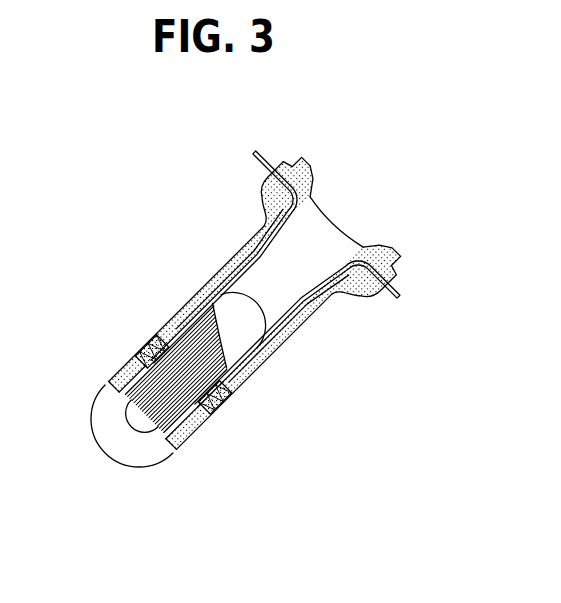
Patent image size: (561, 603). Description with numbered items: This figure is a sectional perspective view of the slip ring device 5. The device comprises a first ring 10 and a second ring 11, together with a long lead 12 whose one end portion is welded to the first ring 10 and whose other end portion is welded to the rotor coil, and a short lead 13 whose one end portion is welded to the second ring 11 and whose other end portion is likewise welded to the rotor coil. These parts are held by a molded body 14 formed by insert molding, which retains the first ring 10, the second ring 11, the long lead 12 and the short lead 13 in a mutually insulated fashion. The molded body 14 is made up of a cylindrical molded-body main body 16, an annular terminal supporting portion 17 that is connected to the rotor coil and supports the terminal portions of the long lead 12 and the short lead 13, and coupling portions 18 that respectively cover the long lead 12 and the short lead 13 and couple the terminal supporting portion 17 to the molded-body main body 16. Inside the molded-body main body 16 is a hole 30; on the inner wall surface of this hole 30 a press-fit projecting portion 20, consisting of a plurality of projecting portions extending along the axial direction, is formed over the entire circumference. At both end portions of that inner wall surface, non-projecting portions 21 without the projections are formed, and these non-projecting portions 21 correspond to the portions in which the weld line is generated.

The slip ring device 5 is at (385, 350).
The first ring 10 is at (110, 376).
The second ring 11 is at (176, 302).
The long lead 12 is at (352, 276).
The short lead 13 is at (247, 247).
The molded body 14 is at (280, 351).
The molded-body main body 16 is at (222, 407).
The terminal supporting portion 17 is at (306, 170).
The coupling portions 18 is at (315, 303).
The press-fit projecting portion 20 is at (152, 334).
The non-projecting portions 21 is at (233, 330).
The hole 30 is at (140, 424).